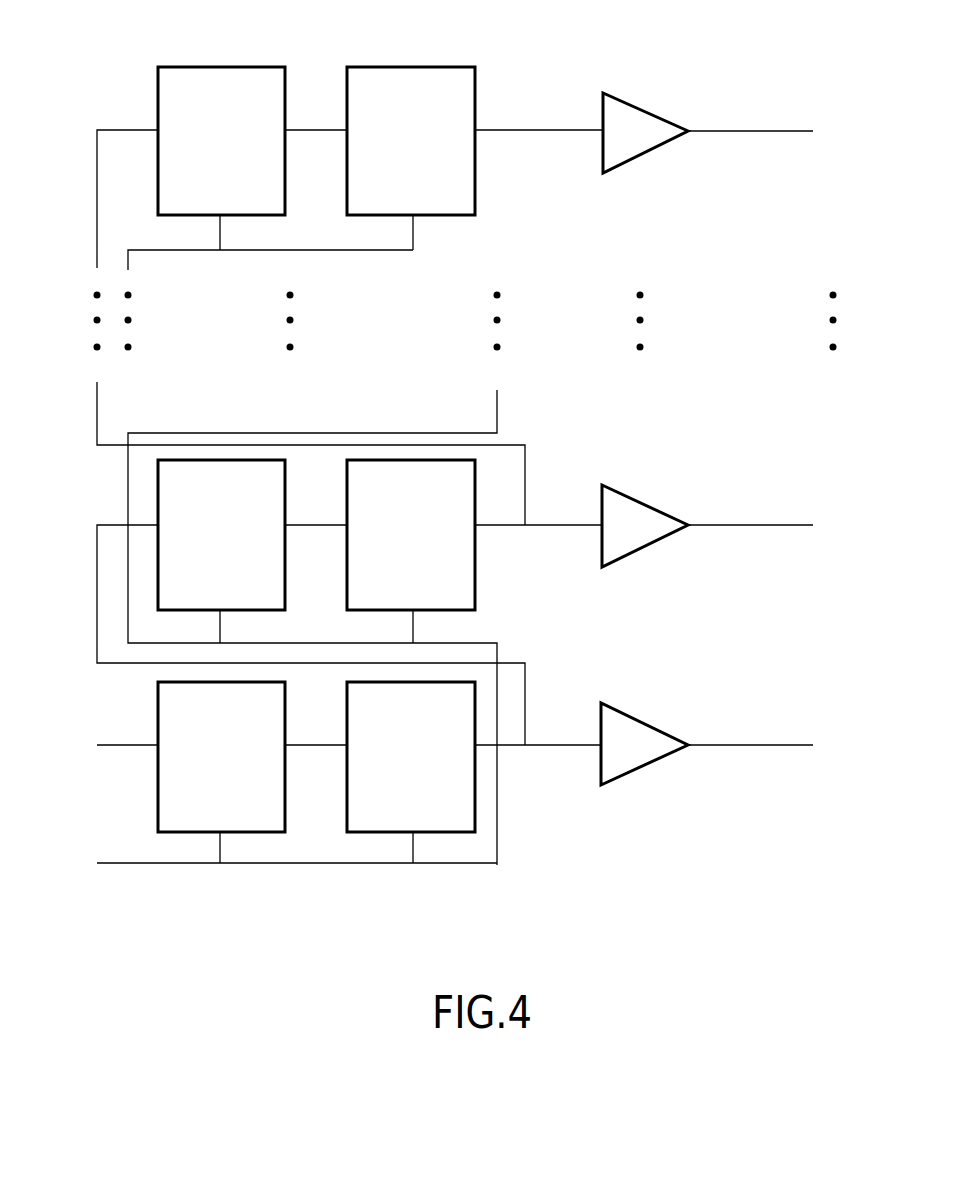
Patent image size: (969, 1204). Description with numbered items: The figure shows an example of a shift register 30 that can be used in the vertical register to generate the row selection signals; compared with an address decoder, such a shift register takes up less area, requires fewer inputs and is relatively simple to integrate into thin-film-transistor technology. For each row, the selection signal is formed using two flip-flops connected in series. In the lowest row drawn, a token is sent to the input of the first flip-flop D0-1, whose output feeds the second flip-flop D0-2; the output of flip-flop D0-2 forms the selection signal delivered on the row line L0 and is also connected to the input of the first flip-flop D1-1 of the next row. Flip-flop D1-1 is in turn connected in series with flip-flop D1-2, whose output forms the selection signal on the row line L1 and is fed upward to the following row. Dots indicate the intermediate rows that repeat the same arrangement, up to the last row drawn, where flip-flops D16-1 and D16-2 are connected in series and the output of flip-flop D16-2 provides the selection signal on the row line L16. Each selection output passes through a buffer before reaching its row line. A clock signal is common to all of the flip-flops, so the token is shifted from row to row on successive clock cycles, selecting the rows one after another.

The shift register 30 is at (452, 493).
The first flip-flop of row sixteen D16-1 is at (189, 100).
The second flip-flop of row sixteen D16-2 is at (379, 100).
The first flip-flop of row one D1-1 is at (195, 493).
The second flip-flop of row one D1-2 is at (385, 493).
The first flip-flop of row zero D0-1 is at (195, 715).
The second flip-flop of row zero D0-2 is at (385, 715).
The row line sixteen L16 is at (731, 133).
The row line one L1 is at (725, 526).
The row line zero L0 is at (724, 744).